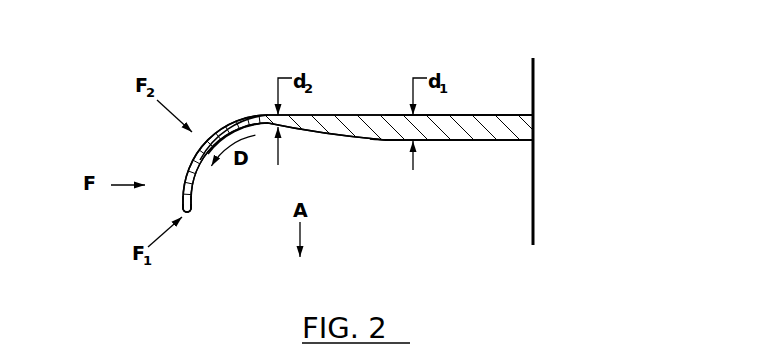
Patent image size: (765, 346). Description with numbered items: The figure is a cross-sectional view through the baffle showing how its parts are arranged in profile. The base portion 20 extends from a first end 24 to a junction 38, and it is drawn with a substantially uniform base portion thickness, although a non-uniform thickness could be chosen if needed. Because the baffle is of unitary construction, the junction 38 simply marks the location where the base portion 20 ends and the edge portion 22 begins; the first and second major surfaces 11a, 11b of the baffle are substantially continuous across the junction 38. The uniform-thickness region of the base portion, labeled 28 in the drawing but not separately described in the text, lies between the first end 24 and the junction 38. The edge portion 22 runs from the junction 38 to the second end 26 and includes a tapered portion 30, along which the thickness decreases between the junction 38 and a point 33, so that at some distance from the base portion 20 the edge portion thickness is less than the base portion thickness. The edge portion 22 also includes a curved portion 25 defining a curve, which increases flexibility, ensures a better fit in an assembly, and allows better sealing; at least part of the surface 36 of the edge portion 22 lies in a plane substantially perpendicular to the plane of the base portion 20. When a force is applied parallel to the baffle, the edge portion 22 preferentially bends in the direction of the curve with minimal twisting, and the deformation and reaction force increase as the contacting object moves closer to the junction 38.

The base portion 20 is at (393, 82).
The edge portion 22 is at (184, 174).
The first end 24 is at (536, 128).
The curved portion 25 is at (238, 118).
The second end 26 is at (196, 208).
The body portion 28 is at (381, 134).
The tapered portion 30 is at (332, 134).
The point 33 is at (260, 128).
The surface 36 is at (181, 209).
The junction 38 is at (383, 142).
The first major surface 11a is at (478, 114).
The second major surface 11b is at (488, 141).